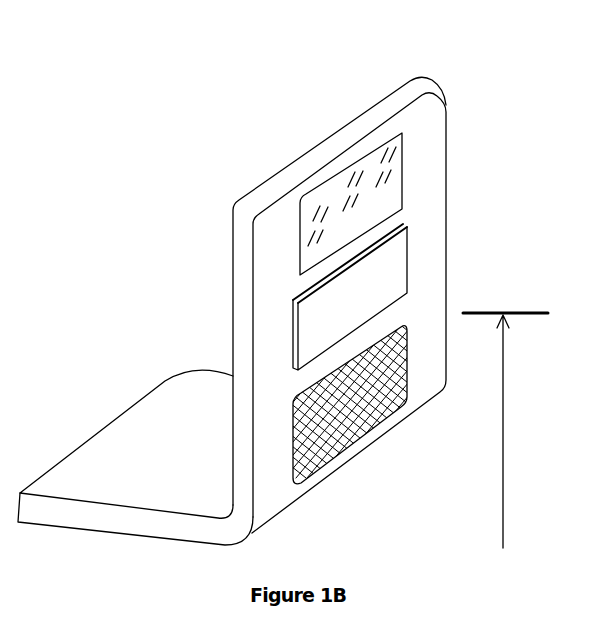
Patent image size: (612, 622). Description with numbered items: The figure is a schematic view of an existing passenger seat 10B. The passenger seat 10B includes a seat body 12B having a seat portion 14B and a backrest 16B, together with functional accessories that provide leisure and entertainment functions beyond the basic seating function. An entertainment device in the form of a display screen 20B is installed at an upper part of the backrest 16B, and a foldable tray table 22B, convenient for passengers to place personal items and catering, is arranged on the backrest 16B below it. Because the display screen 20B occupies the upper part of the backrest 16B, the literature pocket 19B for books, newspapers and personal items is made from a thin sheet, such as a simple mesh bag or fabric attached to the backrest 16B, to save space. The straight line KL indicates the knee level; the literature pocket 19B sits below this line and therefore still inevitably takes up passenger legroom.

The passenger seat 10B is at (345, 83).
The seat body 12B is at (102, 330).
The seat portion 14B is at (220, 390).
The backrest 16B is at (270, 330).
The literature pocket 19B is at (387, 420).
The display screen 20B is at (380, 203).
The foldable tray table 22B is at (383, 277).
The straight line indicating knee level KL is at (521, 427).